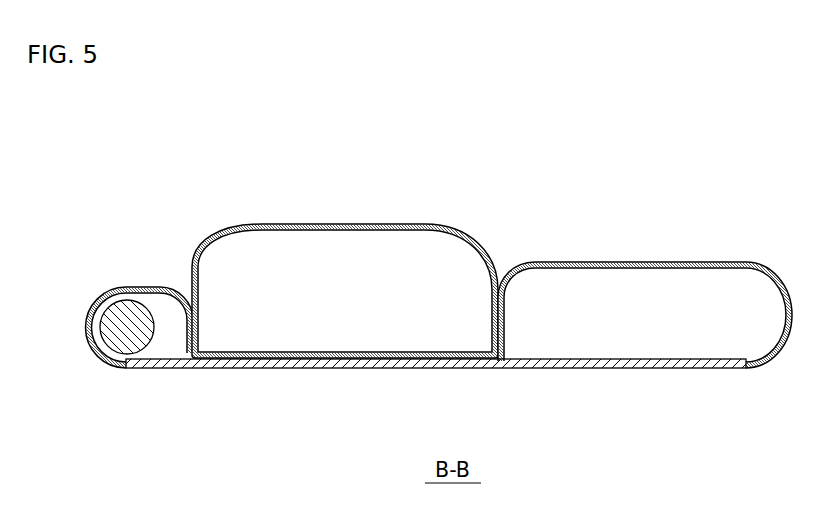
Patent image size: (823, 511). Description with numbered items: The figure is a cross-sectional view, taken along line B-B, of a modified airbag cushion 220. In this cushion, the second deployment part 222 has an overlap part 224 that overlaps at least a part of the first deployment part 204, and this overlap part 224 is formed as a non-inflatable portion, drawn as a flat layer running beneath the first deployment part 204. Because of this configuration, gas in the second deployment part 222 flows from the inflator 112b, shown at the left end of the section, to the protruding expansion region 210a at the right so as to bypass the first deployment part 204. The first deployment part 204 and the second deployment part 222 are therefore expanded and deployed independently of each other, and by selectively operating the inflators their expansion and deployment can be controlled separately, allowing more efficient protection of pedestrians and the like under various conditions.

The airbag cushion 220 is at (201, 156).
The first deployment part 204 is at (333, 223).
The second deployment part 222 is at (510, 268).
The protruding expansion region 210a is at (670, 263).
The inflator 112b is at (128, 301).
The overlap part 224 is at (333, 369).